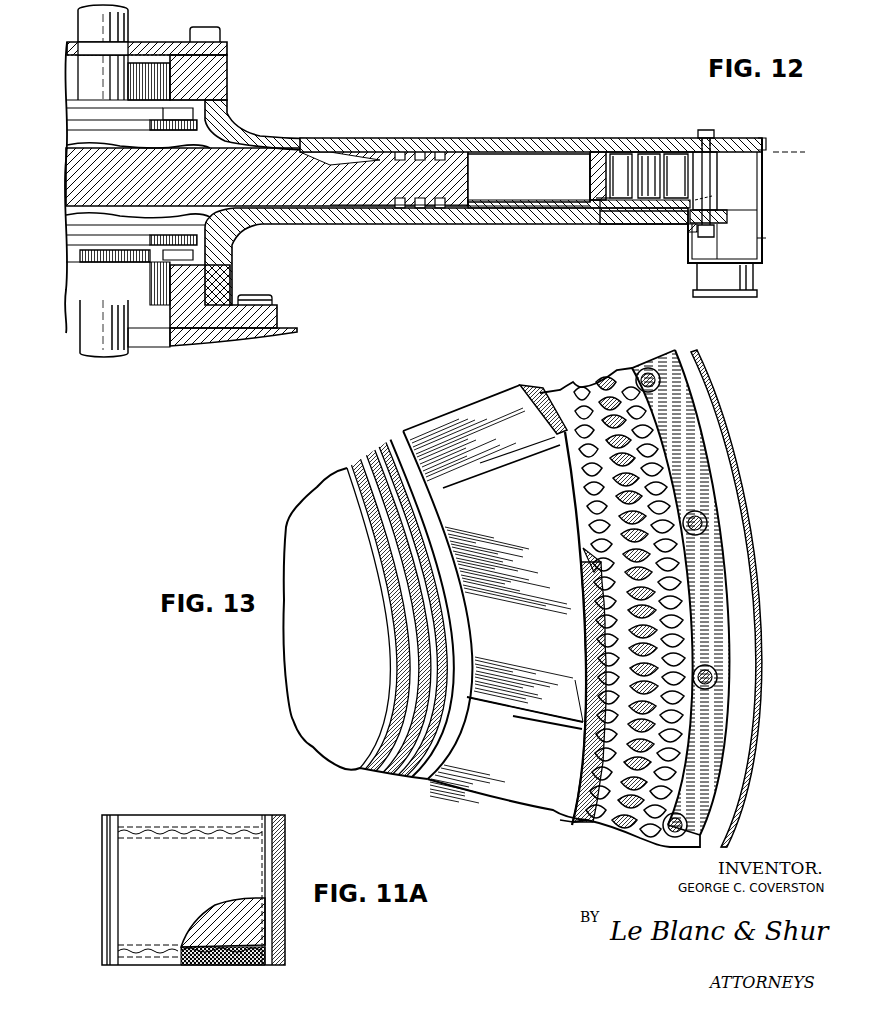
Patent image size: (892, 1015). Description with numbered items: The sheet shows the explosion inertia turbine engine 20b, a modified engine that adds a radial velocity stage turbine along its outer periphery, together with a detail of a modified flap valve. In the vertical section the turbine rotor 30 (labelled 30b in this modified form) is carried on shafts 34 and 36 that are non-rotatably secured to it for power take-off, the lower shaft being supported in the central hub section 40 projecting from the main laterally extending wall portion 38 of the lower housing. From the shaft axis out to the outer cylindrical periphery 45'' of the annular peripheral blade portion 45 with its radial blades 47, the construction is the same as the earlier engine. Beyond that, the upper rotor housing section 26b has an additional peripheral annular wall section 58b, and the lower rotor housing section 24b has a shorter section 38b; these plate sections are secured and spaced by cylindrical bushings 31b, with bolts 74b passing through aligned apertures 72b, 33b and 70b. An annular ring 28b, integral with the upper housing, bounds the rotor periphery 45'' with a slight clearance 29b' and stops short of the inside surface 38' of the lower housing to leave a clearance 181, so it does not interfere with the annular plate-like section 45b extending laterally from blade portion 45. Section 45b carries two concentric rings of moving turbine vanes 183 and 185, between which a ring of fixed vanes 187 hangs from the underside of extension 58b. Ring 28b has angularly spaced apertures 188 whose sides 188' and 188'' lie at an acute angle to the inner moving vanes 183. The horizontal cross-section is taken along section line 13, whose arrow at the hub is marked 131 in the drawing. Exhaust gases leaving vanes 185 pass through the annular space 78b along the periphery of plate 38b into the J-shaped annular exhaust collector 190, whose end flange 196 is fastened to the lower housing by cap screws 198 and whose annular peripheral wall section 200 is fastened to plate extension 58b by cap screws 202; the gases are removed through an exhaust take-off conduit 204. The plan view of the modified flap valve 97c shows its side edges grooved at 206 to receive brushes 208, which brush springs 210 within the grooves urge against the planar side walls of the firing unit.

In FIG. 12, the explosion inertia turbine engine 20b is at (258, 98).
In FIG. 12, the shaft 34 is at (132, 20).
In FIG. 12, the shaft 36 is at (117, 353).
In FIG. 12, the central hub section 40 is at (220, 282).
In FIG. 12, the hub body 30b is at (332, 167).
In FIG. 12, the section indicator 13 131 is at (310, 150).
In FIG. 12, the section line 13— 13 is at (793, 168).
In FIG. 12, the upper rotor housing section 26b is at (405, 118).
In FIG. 12, the lower rotor housing section 24b is at (336, 218).
In FIG. 12, the main annular wall portion 38 is at (399, 227).
In FIG. 12, the inside surface of lower housing section 38' is at (579, 225).
In FIG. 12, the annular peripheral blade portion 45 is at (529, 215).
In FIG. 13, the annular peripheral blade portion 45 is at (495, 602).
In FIG. 12, the outer cylindrical periphery of rotor blades 45'' is at (573, 202).
In FIG. 13, the outer cylindrical periphery of rotor blades 45'' is at (564, 694).
In FIG. 12, the radial blades 47 is at (536, 186).
In FIG. 13, the radial blades 47 is at (518, 708).
In FIG. 12, the clearance 29b' is at (569, 236).
In FIG. 13, the clearance 29b' is at (545, 800).
In FIG. 12, the annular ring 28b is at (598, 165).
In FIG. 13, the annular ring 28b is at (535, 410).
In FIG. 12, the inner ring of turbine vanes 183 is at (619, 165).
In FIG. 13, the inner ring of turbine vanes 183 is at (581, 522).
In FIG. 12, the ring of fixed turbine vanes 187 is at (649, 165).
In FIG. 13, the ring of fixed turbine vanes 187 is at (596, 384).
In FIG. 12, the peripheral annular wall section 58b is at (660, 145).
In FIG. 12, the outer ring of turbine vanes 185 is at (678, 165).
In FIG. 13, the outer ring of turbine vanes 185 is at (655, 472).
In FIG. 12, the cylindrical bushings 31b is at (719, 172).
In FIG. 13, the cylindrical bushings 31b is at (661, 369).
In FIG. 12, the bolts 74b is at (710, 140).
In FIG. 13, the bolts 74b is at (647, 369).
In FIG. 12, the aperture 72b is at (716, 150).
In FIG. 12, the aperture 33b is at (714, 196).
In FIG. 12, the cap screws 202 is at (768, 142).
In FIG. 12, the annular peripheral wall section 200 is at (765, 203).
In FIG. 13, the annular peripheral wall section 200 is at (760, 548).
In FIG. 12, the annular space 78b is at (748, 223).
In FIG. 13, the annular space 78b is at (755, 630).
In FIG. 12, the aperture 70b is at (733, 241).
In FIG. 12, the cap screws 198 is at (672, 225).
In FIG. 12, the end flange 196 is at (688, 232).
In FIG. 12, the peripheral plate section of lower housing 38b is at (640, 226).
In FIG. 13, the peripheral plate section of lower housing 38b is at (727, 615).
In FIG. 12, the annular plate-like section 45b is at (608, 213).
In FIG. 13, the annular plate-like section 45b is at (658, 458).
In FIG. 12, the clearance 181 is at (600, 208).
In FIG. 12, the annular exhaust collector 190 is at (762, 244).
In FIG. 12, the exhaust take-off conduit 204 is at (755, 286).
In FIG. 13, the turbine rotor 30 is at (360, 679).
In FIG. 13, the apertures 188 is at (559, 628).
In FIG. 13, the aperture side 188' is at (519, 460).
In FIG. 13, the aperture side 188'' is at (573, 559).
In FIG. 11A, the flap valve 97c is at (200, 893).
In FIG. 11A, the grooves 206 is at (182, 840).
In FIG. 11A, the brushes 208 is at (172, 815).
In FIG. 11A, the brush springs 210 is at (204, 826).